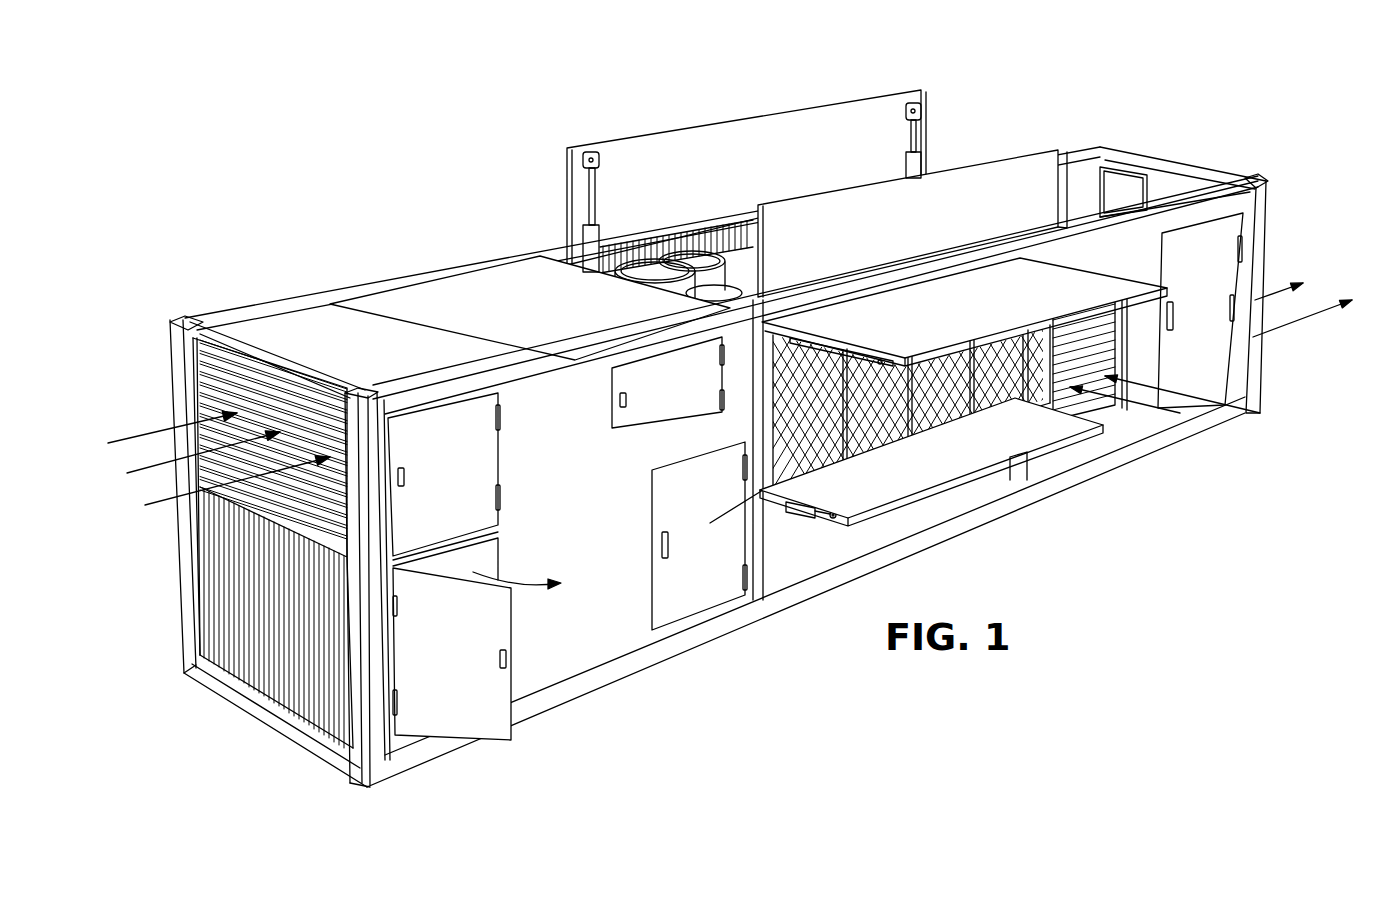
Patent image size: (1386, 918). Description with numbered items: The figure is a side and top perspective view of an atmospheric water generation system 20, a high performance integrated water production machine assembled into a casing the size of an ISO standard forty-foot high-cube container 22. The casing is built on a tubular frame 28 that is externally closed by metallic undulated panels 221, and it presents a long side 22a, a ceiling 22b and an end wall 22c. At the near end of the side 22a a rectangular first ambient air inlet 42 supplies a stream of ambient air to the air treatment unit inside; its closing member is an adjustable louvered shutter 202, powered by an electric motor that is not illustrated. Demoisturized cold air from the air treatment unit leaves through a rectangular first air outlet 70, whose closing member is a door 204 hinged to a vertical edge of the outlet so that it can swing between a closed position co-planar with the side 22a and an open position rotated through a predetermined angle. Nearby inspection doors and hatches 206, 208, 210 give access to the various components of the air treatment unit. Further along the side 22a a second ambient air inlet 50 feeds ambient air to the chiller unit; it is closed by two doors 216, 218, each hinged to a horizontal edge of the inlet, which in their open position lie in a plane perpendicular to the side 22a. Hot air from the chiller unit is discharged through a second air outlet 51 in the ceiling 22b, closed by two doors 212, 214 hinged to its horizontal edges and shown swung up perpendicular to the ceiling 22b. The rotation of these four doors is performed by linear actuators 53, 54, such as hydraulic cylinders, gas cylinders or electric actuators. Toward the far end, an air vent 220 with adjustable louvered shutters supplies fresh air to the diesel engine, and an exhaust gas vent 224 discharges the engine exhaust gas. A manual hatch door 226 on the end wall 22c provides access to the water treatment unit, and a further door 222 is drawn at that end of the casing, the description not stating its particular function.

The atmospheric water generation system 20 is at (1037, 140).
The container 22 is at (400, 268).
The side 22a is at (584, 632).
The ceiling 22b is at (490, 295).
The end wall 22c is at (1245, 170).
The tubular frame 28 is at (668, 648).
The first ambient air inlet 42 is at (203, 370).
The second ambient air inlet 50 is at (1015, 398).
The second air outlet 51 is at (938, 150).
The linear actuator 53 is at (912, 136).
The linear actuator 54 is at (805, 347).
The first air outlet 70 is at (490, 556).
The adjustable louvered shutter 202 is at (200, 408).
The door 204 is at (478, 733).
The inspection door 206 is at (478, 468).
The inspection door 208 is at (636, 380).
The inspection door 210 is at (710, 588).
The door 212 is at (680, 152).
The door 214 is at (978, 187).
The door 216 is at (1015, 274).
The door 218 is at (963, 485).
The air vent 220 is at (1103, 417).
The metallic undulated panels 221 is at (453, 333).
The end door 222 is at (1230, 230).
The exhaust gas vent 224 is at (1279, 287).
The manual hatch door 226 is at (1138, 190).